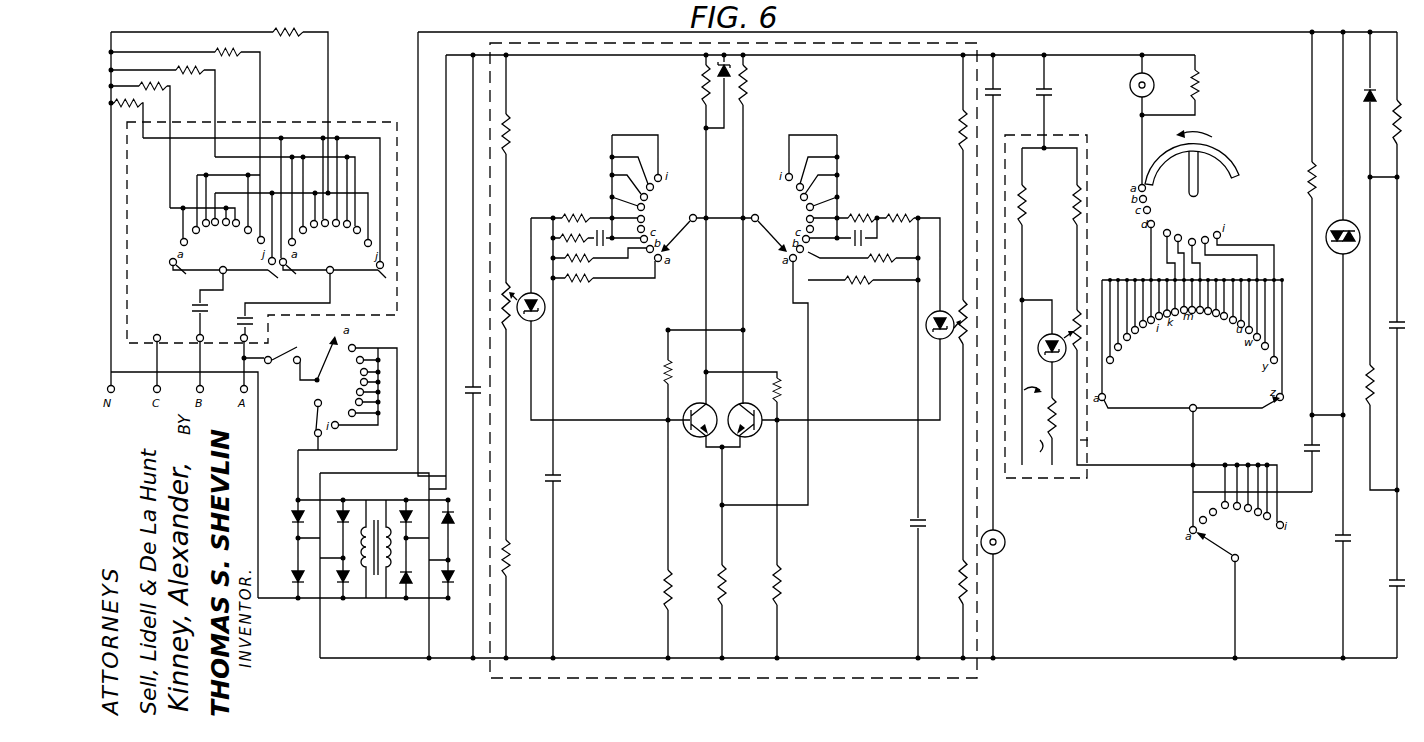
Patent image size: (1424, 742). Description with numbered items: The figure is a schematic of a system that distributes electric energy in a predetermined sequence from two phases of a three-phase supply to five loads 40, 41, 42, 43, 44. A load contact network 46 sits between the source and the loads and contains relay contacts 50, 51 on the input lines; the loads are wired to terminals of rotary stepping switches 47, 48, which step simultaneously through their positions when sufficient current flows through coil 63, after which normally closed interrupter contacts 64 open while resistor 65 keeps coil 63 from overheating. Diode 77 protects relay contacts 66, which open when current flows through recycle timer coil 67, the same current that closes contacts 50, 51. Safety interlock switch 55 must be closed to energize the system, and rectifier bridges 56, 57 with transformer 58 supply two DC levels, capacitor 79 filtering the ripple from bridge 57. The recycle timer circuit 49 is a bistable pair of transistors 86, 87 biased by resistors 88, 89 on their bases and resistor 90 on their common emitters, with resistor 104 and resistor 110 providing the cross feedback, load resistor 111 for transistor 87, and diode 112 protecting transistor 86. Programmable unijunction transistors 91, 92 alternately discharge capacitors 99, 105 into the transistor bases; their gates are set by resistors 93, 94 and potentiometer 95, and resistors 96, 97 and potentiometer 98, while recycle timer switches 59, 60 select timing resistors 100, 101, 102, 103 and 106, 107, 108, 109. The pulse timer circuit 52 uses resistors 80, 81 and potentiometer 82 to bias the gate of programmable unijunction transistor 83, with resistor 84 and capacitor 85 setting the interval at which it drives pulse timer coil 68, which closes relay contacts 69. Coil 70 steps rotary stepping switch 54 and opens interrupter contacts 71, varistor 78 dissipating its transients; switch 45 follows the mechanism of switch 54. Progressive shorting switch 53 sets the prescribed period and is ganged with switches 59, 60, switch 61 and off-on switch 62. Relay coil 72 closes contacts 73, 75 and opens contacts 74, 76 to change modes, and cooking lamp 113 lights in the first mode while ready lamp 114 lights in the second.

The load 40 is at (135, 101).
The load 41 is at (160, 84).
The load 42 is at (205, 67).
The load 43 is at (248, 47).
The load 44 is at (303, 30).
The switch 45 is at (312, 420).
The load contact network 46 is at (343, 123).
The rotary stepping switch 47 is at (236, 256).
The rotary stepping switch 48 is at (344, 256).
The recycle timer circuit 49 is at (705, 681).
The relay contact 50 is at (195, 307).
The relay contact 51 is at (237, 316).
The pulse timer circuit 52 is at (1028, 478).
The progressive shorting switch 53 is at (1206, 220).
The rotary stepping switch 54 is at (1206, 356).
The safety interlock switch 55 is at (283, 358).
The rectifier bridge 56 is at (337, 598).
The rectifier bridge 57 is at (408, 598).
The transformer 58 is at (372, 552).
The recycle timer switch 59 is at (692, 216).
The recycle timer switch 60 is at (794, 216).
The switch 61 is at (1249, 536).
The off-on switch 62 is at (349, 397).
The coil 63 is at (1394, 138).
The interrupter contacts 64 is at (1394, 320).
The resistor 65 is at (1374, 404).
The relay contacts 66 is at (1392, 590).
The recycle timer coil 67 is at (700, 90).
The pulse timer coil 68 is at (1040, 452).
The relay contacts 69 is at (1338, 546).
The coil 70 is at (1308, 170).
The interrupter contacts 71 is at (1305, 448).
The relay coil 72 is at (1202, 86).
The relay contacts 73 is at (1048, 100).
The relay contacts 74 is at (998, 90).
The recycle timer contacts 75 is at (600, 230).
The recycle timer relay contacts 76 is at (868, 240).
The diode 77 is at (1362, 98).
The varistor 78 is at (1338, 254).
The capacitor 79 is at (470, 384).
The resistor 80 is at (1072, 214).
The resistor 81 is at (1088, 440).
The potentiometer 82 is at (1072, 316).
The programmable unijunction transistor 83 is at (1044, 338).
The resistor 84 is at (1027, 232).
The capacitor 85 is at (1040, 412).
The transistor 86 is at (696, 438).
The transistor 87 is at (750, 438).
The resistor 88 is at (662, 588).
The resistor 89 is at (784, 586).
The resistor 90 is at (716, 592).
The programmable unijunction transistor 91 is at (546, 310).
The programmable unijunction transistor 92 is at (925, 326).
The resistor 93 is at (512, 128).
The resistor 94 is at (512, 554).
The potentiometer 95 is at (518, 320).
The resistor 96 is at (958, 150).
The resistor 97 is at (957, 582).
The potentiometer 98 is at (962, 300).
The capacitor 99 is at (562, 476).
The timing resistor 100 is at (578, 212).
The timing resistor 101 is at (575, 232).
The timing resistor 102 is at (590, 260).
The timing resistor 103 is at (583, 283).
The resistor 104 is at (790, 383).
The capacitor 105 is at (912, 520).
The timing resistor 106 is at (858, 212).
The timing resistor 107 is at (896, 212).
The timing resistor 108 is at (876, 262).
The timing resistor 109 is at (868, 285).
The resistor 110 is at (662, 374).
The load resistor 111 is at (750, 92).
The diode 112 is at (732, 62).
The cooking lamp 113 is at (1130, 85).
The ready lamp 114 is at (1006, 543).